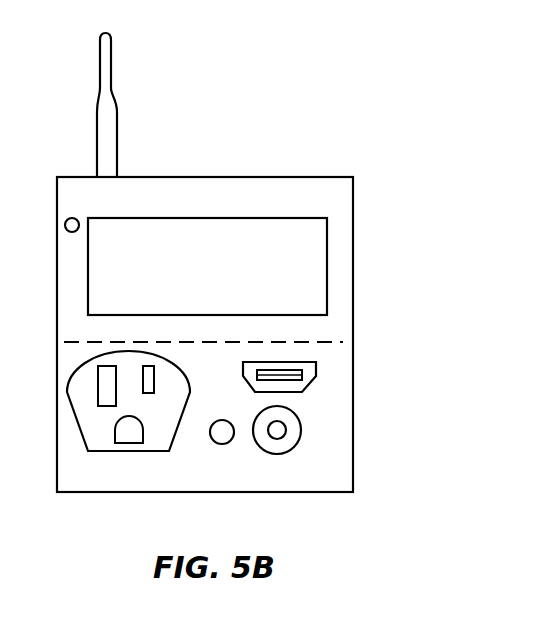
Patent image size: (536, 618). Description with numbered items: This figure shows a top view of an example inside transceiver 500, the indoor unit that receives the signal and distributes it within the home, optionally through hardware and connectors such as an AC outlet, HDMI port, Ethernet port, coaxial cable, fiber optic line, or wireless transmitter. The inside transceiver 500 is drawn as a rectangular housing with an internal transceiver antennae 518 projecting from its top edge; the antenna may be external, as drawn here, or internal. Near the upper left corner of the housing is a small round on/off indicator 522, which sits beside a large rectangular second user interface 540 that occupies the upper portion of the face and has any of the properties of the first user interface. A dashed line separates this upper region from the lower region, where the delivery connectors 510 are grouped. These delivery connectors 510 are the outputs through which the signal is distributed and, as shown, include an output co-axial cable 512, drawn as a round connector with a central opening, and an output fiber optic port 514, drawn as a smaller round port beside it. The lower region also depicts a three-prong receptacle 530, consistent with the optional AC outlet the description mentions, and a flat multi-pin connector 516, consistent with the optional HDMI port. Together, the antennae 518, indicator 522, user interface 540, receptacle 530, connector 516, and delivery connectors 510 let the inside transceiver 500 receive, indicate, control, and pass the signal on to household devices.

The inside transceiver 500 is at (378, 106).
The delivery connectors 510 is at (378, 453).
The internal transceiver antennae 518 is at (97, 120).
The on/off indicator 522 is at (73, 218).
The second user interface 540 is at (267, 219).
The power outlet 530 is at (130, 452).
The connector port 516 is at (305, 385).
The output fiber optic port 514 is at (220, 444).
The output co-axial cable 512 is at (276, 453).